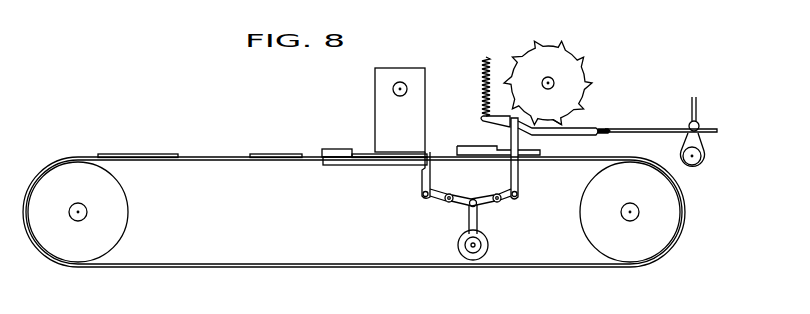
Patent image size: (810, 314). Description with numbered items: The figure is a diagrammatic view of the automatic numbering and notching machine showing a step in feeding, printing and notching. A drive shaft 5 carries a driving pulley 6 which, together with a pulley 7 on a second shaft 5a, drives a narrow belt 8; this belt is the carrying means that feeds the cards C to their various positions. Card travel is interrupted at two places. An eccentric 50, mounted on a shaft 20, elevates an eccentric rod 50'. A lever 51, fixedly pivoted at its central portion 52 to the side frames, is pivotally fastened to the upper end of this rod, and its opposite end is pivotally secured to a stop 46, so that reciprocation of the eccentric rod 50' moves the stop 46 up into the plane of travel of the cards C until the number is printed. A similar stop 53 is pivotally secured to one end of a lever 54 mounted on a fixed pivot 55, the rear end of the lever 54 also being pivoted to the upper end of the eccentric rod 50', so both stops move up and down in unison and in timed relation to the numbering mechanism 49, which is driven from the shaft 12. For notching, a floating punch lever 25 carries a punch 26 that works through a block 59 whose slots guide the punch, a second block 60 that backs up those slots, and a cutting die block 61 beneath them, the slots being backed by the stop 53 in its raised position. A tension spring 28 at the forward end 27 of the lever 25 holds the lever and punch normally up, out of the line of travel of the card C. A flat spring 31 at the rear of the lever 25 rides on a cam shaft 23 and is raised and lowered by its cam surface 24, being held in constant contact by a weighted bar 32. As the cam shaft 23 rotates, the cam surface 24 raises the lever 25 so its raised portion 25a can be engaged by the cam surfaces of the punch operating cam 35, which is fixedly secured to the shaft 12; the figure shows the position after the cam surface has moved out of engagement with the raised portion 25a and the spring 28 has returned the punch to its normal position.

The drive shaft 5 is at (634, 204).
The shaft 5a is at (84, 196).
The driving pulley 6 is at (673, 228).
The pulley 7 is at (122, 213).
The belt 8 is at (170, 268).
The shaft 12 is at (548, 77).
The shaft 20 is at (464, 244).
The cam shaft 23 is at (700, 164).
The cam surface 24 is at (706, 141).
The punch lever 25 is at (587, 128).
The raised portion 25a is at (549, 121).
The punch 26 is at (509, 134).
The forward end 27 is at (481, 117).
The tension spring 28 is at (482, 72).
The flat spring 31 is at (649, 128).
The weighted bar 32 is at (699, 110).
The punch operating cam 35 is at (556, 53).
The stop 46 is at (421, 182).
The numbering mechanism 49 is at (375, 91).
The eccentric 50 is at (492, 245).
The eccentric rod 50' is at (455, 219).
The lever 51 is at (437, 199).
The central portion 52 is at (450, 193).
The stop 53 is at (521, 181).
The lever 54 is at (506, 201).
The fixed pivot 55 is at (496, 193).
The block 59 is at (462, 147).
The second block 60 is at (540, 152).
The cutting die block 61 is at (373, 164).
The card C is at (168, 154).